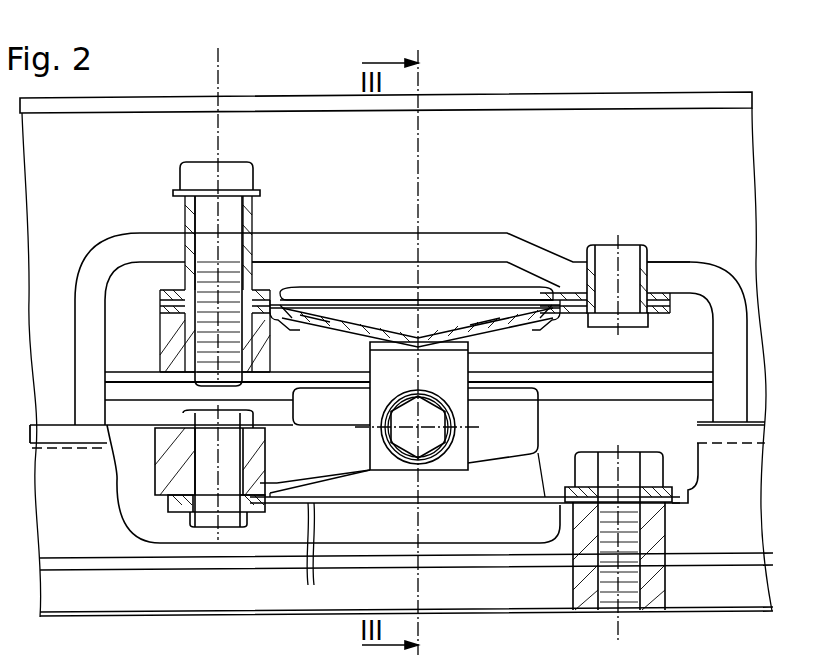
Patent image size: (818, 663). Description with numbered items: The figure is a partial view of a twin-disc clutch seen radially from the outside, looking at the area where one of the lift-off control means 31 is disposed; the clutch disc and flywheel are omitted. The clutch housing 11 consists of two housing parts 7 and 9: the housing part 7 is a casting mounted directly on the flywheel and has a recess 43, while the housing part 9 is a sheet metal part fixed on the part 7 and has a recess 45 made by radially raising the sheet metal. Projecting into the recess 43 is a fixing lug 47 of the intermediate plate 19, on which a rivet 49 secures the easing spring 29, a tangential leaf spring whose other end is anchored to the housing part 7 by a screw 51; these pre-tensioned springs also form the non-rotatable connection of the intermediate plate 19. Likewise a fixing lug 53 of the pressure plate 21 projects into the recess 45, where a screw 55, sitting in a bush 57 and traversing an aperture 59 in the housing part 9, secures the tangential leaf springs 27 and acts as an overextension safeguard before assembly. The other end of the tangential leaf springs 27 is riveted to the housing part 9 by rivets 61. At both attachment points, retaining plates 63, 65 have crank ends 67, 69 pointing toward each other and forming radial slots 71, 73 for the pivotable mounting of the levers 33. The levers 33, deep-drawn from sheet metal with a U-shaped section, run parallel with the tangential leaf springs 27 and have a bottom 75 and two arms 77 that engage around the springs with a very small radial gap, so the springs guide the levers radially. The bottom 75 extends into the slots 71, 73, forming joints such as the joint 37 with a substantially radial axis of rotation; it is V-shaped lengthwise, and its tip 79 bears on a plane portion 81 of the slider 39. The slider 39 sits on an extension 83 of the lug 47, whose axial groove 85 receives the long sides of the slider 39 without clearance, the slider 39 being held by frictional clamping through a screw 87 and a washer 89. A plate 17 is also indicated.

The housing part 7 is at (758, 486).
The housing part 9 is at (756, 192).
The clutch housing 11 is at (722, 92).
The intermediate plate 17 is at (672, 354).
The intermediate plate 19 is at (136, 458).
The pressure plate 21 is at (132, 270).
The tangential leaf springs 27 is at (676, 303).
The easing spring 29 is at (308, 565).
The lift-off control means 31 is at (470, 444).
The levers 33 is at (392, 308).
The joint 37 is at (619, 556).
The slider 39 is at (374, 420).
The recess 43 is at (116, 505).
The recess 45 is at (302, 260).
The fixing lug 47 is at (174, 508).
The rivet 49 is at (205, 498).
The screw 51 is at (657, 472).
The fixing lug 53 is at (178, 336).
The screw 55 is at (192, 170).
The bush 57 is at (186, 214).
The aperture 59 is at (178, 242).
The rivets 61 is at (632, 282).
The retaining plate 63 is at (676, 308).
The retaining plate 65 is at (160, 306).
The crank end 67 is at (560, 325).
The crank end 69 is at (374, 394).
The slot 71 is at (545, 328).
The slot 73 is at (282, 318).
The bottom 75 is at (498, 300).
The arms 77 is at (526, 290).
The tip 79 is at (426, 322).
The plane portion 81 is at (397, 326).
The extension 83 is at (540, 456).
The groove 85 is at (466, 442).
The screw 87 is at (411, 446).
The washer 89 is at (395, 452).